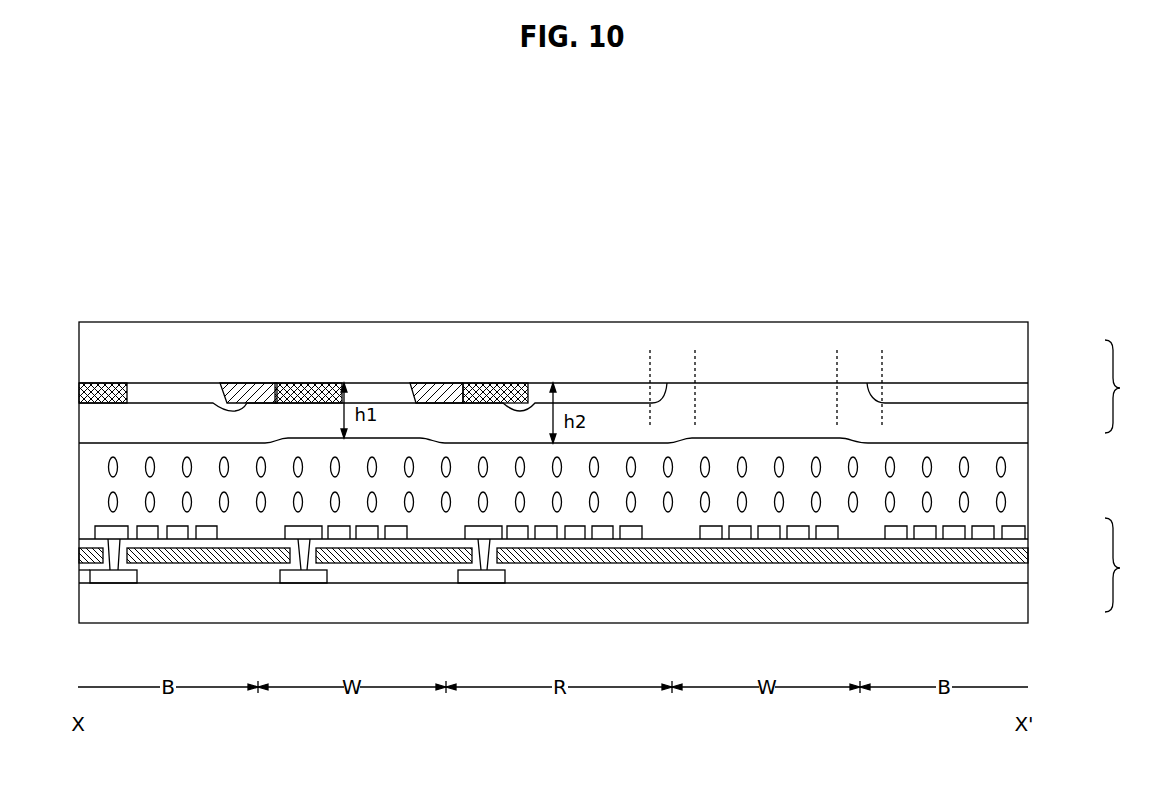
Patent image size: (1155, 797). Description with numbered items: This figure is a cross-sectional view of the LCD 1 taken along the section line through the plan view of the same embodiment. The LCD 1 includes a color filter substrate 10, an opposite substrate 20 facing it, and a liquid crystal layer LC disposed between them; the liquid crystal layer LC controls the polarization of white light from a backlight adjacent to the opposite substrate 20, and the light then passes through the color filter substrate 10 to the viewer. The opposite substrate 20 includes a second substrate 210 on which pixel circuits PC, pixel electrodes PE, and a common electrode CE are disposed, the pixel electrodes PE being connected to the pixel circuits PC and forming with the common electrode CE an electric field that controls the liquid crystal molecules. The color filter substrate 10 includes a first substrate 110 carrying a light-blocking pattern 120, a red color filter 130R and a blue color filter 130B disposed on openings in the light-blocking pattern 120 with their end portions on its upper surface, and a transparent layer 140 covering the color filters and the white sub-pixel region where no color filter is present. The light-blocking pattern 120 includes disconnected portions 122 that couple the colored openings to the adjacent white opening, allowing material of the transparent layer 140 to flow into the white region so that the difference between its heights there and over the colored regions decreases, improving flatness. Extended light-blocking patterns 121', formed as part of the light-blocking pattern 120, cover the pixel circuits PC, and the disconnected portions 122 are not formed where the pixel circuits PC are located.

The LCD 1 is at (1100, 295).
The color filter substrate 10 is at (1127, 386).
The first substrate 110 is at (1015, 350).
The light-blocking pattern 120 is at (252, 383).
The extended light-blocking patterns 121' is at (298, 334).
The disconnected portions 122 is at (692, 400).
The blue color filter 130B is at (156, 388).
The red color filter 130R is at (600, 393).
The transparent layer 140 is at (1015, 423).
The liquid crystal layer LC is at (1015, 486).
The pixel electrodes PE is at (1025, 530).
The common electrode CE is at (1030, 560).
The pixel circuits PC is at (113, 583).
The second substrate 210 is at (1015, 602).
The opposite substrate 20 is at (1127, 565).